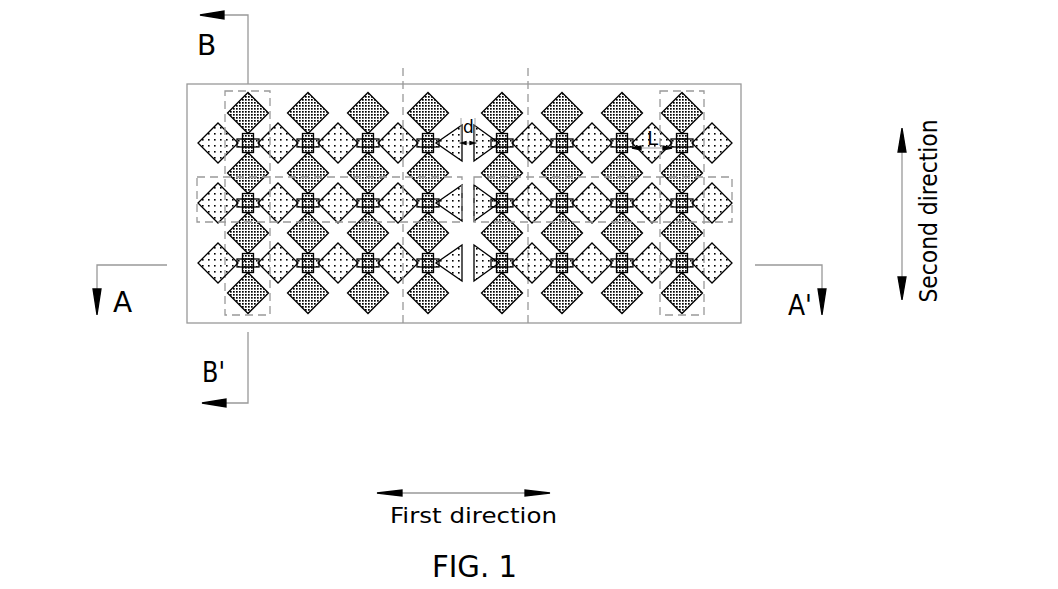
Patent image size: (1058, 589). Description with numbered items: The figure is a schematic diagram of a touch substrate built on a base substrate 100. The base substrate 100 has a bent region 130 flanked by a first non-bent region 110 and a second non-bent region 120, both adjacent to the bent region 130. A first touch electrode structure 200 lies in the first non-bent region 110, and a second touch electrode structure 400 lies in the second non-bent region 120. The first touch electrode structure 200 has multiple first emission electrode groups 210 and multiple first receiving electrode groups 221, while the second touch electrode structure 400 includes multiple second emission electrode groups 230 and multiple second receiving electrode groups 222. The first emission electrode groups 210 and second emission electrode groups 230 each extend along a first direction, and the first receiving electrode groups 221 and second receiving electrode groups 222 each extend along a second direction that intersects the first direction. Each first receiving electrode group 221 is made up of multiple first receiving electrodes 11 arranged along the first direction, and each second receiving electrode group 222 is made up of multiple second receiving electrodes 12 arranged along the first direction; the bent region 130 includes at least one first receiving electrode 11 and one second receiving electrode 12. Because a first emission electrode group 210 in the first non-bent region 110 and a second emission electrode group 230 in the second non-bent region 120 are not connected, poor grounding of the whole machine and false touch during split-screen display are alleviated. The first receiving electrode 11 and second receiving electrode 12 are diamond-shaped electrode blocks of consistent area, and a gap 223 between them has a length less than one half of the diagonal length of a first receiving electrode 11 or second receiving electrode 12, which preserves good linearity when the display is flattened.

The base substrate 100 is at (638, 397).
The first non-bent region 110 is at (402, 328).
The second non-bent region 120 is at (740, 330).
The bent region 130 is at (523, 328).
The first touch electrode structure 200 is at (95, 88).
The first emission electrode group 210 is at (227, 101).
The first receiving electrode group 221 is at (196, 178).
The second receiving electrode group 222 is at (734, 190).
The gap 223 is at (462, 259).
The second emission electrode group 230 is at (703, 100).
The second touch electrode structure 400 is at (827, 112).
The first receiving electrode 11 is at (205, 256).
The second receiving electrode 12 is at (727, 258).